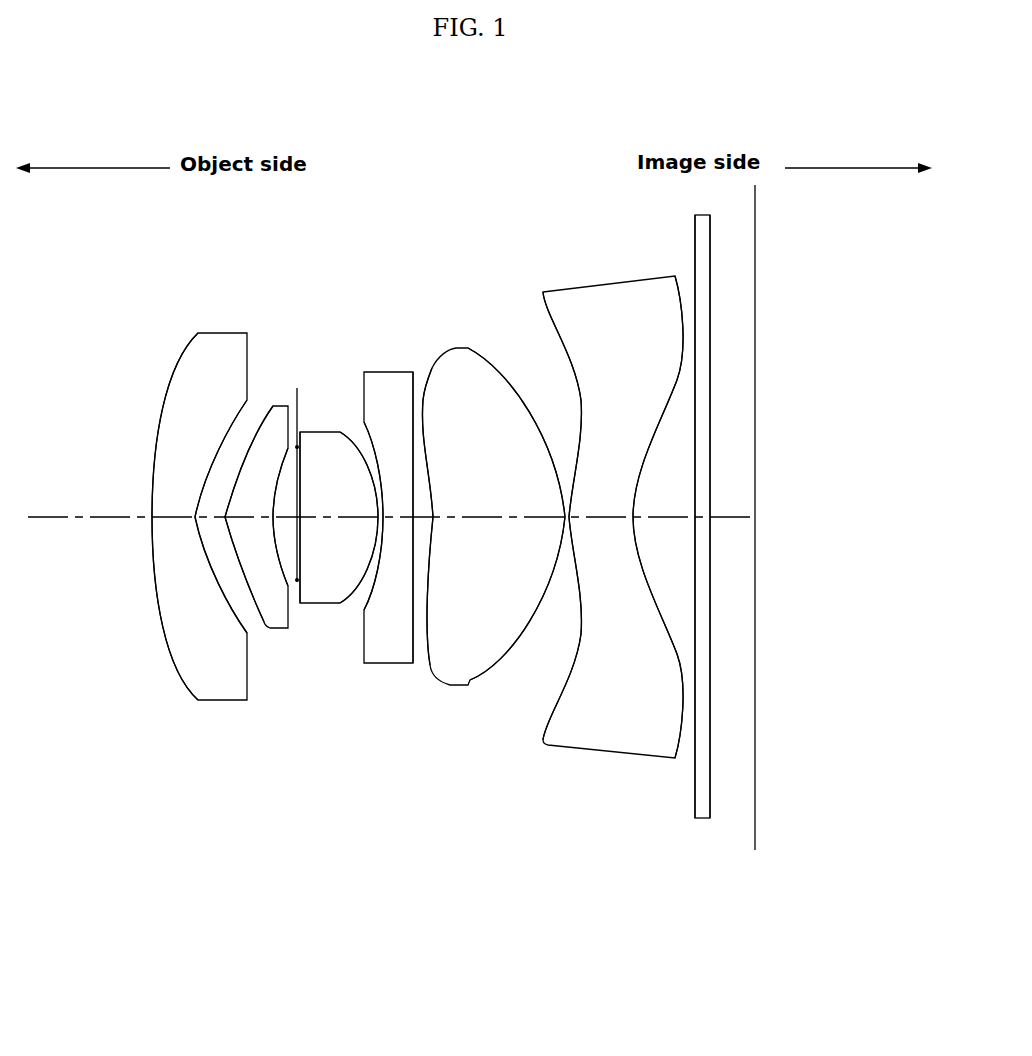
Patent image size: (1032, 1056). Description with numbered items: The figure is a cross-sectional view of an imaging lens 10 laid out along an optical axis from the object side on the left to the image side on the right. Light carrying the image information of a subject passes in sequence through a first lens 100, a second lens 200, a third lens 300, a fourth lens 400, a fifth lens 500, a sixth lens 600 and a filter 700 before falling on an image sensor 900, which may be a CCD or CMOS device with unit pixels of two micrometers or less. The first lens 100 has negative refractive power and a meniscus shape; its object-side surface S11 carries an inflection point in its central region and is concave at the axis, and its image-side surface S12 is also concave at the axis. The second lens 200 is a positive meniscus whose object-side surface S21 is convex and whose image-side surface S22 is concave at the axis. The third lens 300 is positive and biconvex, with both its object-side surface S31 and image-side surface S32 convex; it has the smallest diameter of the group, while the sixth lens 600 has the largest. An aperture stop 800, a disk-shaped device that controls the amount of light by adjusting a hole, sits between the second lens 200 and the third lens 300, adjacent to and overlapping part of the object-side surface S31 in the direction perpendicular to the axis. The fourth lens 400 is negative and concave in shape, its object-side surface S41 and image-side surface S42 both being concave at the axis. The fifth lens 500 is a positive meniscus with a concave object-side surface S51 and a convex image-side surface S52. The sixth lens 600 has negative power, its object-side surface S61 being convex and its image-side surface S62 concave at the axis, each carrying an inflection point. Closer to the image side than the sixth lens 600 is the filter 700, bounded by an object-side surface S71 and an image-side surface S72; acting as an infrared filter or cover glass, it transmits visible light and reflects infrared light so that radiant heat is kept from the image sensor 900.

The imaging lens 10 is at (92, 93).
The first lens 100 is at (178, 375).
The second lens 200 is at (280, 407).
The third lens 300 is at (326, 432).
The fourth lens 400 is at (392, 657).
The fifth lens 500 is at (458, 686).
The sixth lens 600 is at (615, 747).
The filter 700 is at (703, 818).
The aperture stop 800 is at (297, 582).
The image sensor 900 is at (757, 434).
The object-side surface of the first lens S11 is at (165, 658).
The image-side surface of the first lens S12 is at (248, 683).
The object-side surface of the second lens S21 is at (260, 622).
The image-side surface of the second lens S22 is at (290, 617).
The object-side surface of the third lens S31 is at (300, 432).
The image-side surface of the third lens S32 is at (350, 437).
The object-side surface of the fourth lens S41 is at (363, 655).
The image-side surface of the fourth lens S42 is at (419, 379).
The object-side surface of the fifth lens S51 is at (428, 667).
The image-side surface of the fifth lens S52 is at (498, 643).
The object-side surface of the sixth lens S61 is at (583, 405).
The image-side surface of the sixth lens S62 is at (682, 317).
The object-side surface of the filter S71 is at (695, 237).
The image-side surface of the filter S72 is at (710, 248).